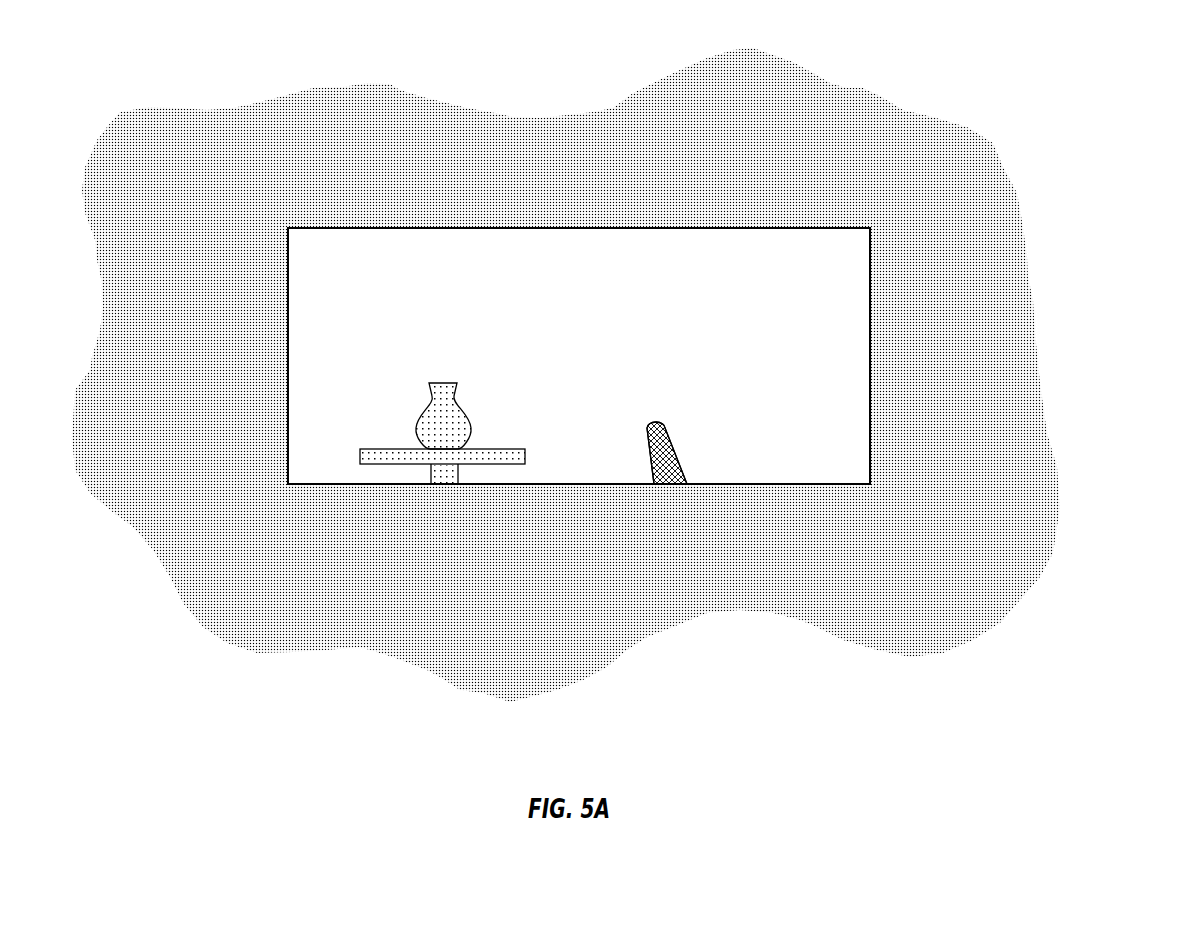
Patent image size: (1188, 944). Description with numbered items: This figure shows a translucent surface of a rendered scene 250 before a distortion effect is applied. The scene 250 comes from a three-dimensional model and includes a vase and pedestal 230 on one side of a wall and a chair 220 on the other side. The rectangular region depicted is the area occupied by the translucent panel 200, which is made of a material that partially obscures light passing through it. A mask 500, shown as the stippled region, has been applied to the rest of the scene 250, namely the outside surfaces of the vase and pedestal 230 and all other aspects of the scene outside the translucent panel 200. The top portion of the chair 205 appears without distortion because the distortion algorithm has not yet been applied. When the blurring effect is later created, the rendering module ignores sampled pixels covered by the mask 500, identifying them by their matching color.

The scene 250 is at (552, 50).
The mask 500 is at (843, 167).
The translucent panel 200 is at (853, 260).
The top portion of the chair 205 is at (673, 447).
The chair 220 is at (637, 421).
The vase and pedestal 230 is at (365, 383).